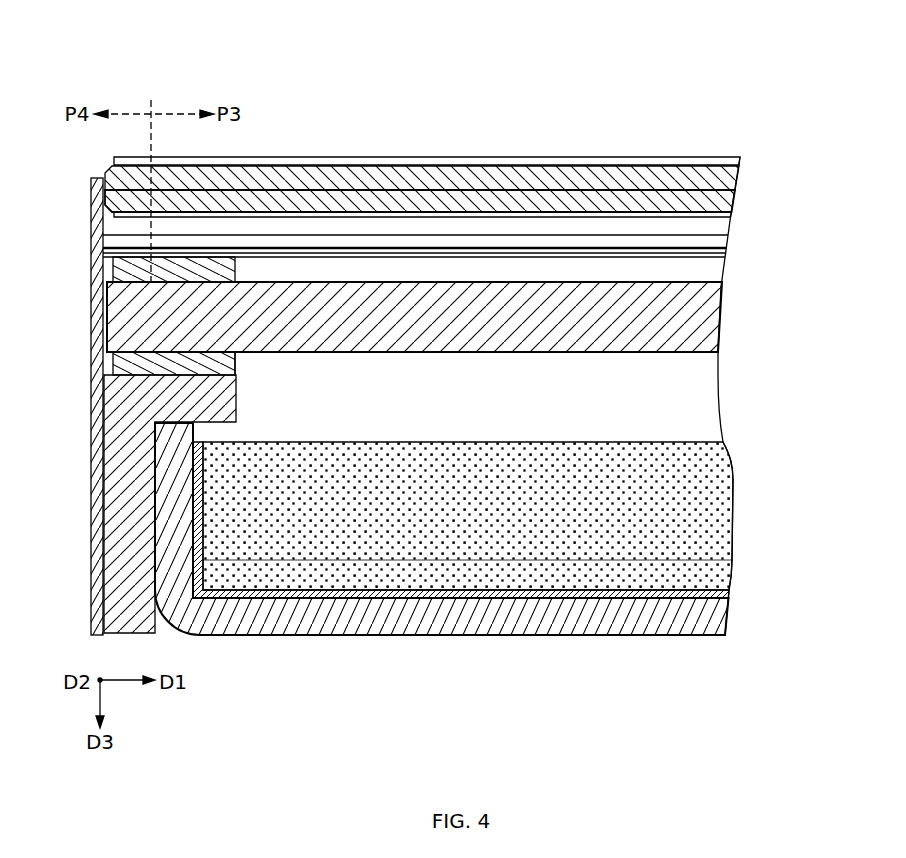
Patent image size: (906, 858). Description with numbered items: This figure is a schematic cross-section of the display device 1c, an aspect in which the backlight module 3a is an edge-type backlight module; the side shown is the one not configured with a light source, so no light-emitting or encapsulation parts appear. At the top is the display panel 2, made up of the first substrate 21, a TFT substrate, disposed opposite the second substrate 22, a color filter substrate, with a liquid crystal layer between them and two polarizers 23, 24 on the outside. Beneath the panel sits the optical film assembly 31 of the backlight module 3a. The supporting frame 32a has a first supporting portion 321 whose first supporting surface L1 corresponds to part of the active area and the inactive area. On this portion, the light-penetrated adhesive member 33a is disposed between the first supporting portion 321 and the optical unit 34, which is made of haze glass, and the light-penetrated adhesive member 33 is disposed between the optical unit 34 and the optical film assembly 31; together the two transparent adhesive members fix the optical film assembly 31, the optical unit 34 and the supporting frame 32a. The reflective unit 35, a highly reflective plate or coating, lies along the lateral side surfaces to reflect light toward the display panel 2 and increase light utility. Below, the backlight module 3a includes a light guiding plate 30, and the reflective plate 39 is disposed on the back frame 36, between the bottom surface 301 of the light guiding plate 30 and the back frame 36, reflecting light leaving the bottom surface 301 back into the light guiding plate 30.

The display device 1c is at (150, 50).
The display panel 2 is at (458, 174).
The first substrate 21 is at (722, 196).
The second substrate 22 is at (733, 176).
The polarizer 23 is at (445, 215).
The polarizer 24 is at (727, 160).
The backlight module 3a is at (97, 492).
The light guiding plate 30 is at (492, 559).
The bottom surface 301 is at (602, 597).
The optical film assembly 31 is at (732, 218).
The supporting frame 32a is at (236, 398).
The first supporting portion 321 is at (233, 398).
The light-penetrated adhesive member 33 is at (123, 268).
The light-penetrated adhesive member 33a is at (113, 358).
The optical unit 34 is at (560, 334).
The reflective unit 35 is at (100, 442).
The back frame 36 is at (713, 614).
The reflective plate 39 is at (728, 593).
The first supporting surface L1 is at (240, 363).